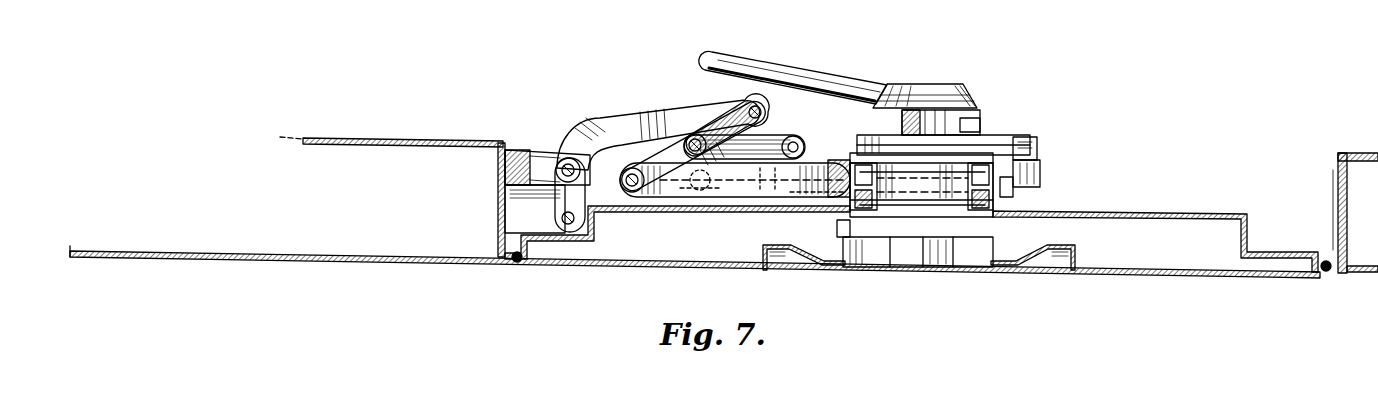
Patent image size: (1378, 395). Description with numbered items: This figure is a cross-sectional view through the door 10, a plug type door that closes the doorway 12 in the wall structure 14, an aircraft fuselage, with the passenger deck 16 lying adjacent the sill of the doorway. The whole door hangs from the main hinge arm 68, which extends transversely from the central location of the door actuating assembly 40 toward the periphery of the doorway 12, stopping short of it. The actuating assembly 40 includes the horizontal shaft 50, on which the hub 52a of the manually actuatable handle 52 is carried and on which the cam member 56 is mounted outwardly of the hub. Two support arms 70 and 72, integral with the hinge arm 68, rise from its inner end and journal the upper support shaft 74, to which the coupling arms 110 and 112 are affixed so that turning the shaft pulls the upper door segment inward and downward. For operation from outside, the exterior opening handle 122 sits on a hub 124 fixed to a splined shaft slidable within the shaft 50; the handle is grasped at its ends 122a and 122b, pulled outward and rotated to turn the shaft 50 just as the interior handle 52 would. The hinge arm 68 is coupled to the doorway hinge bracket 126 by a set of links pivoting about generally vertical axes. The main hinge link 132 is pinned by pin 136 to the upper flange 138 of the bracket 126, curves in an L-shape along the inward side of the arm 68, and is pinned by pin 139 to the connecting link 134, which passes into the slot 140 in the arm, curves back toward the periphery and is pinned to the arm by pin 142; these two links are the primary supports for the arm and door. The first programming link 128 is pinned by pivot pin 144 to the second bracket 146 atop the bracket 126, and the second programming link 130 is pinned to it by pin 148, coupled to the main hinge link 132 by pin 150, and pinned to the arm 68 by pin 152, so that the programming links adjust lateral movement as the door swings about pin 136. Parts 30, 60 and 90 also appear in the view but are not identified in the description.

The door 10 is at (1153, 203).
The doorway 12 is at (497, 190).
The wall structure 14 is at (380, 263).
The passenger deck 16 is at (1296, 232).
The hinge 30 is at (517, 264).
The door actuating assembly 40 is at (1045, 130).
The shaft 50 is at (916, 105).
The handle 52 is at (813, 70).
The hub 52a is at (956, 86).
The cam member 56 is at (981, 122).
The mounting plate 60 is at (1005, 135).
The main hinge arm 68 is at (839, 159).
The support arm 70 is at (1015, 192).
The support arm 72 is at (862, 162).
The upper support shaft 74 is at (840, 228).
The adjusting nut 90 is at (1038, 150).
The coupling arm 110 is at (1041, 172).
The coupling arm 112 is at (850, 222).
The exterior opening handle 122 is at (966, 268).
The handle end 122a is at (1051, 268).
The handle end 122b is at (801, 270).
The hub 124 is at (921, 268).
The doorway hinge bracket 126 is at (547, 156).
The first programming link 128 is at (678, 112).
The second programming link 130 is at (739, 102).
The main hinge link 132 is at (626, 146).
The connecting link 134 is at (729, 198).
The pin 136 is at (570, 233).
The upper flange 138 is at (520, 225).
The pin 139 is at (801, 140).
The slot 140 is at (811, 200).
The pin 142 is at (683, 198).
The pivot pin 144 is at (571, 157).
The second bracket 146 is at (518, 152).
The pin 148 is at (756, 104).
The pin 150 is at (697, 134).
The pin 152 is at (635, 196).